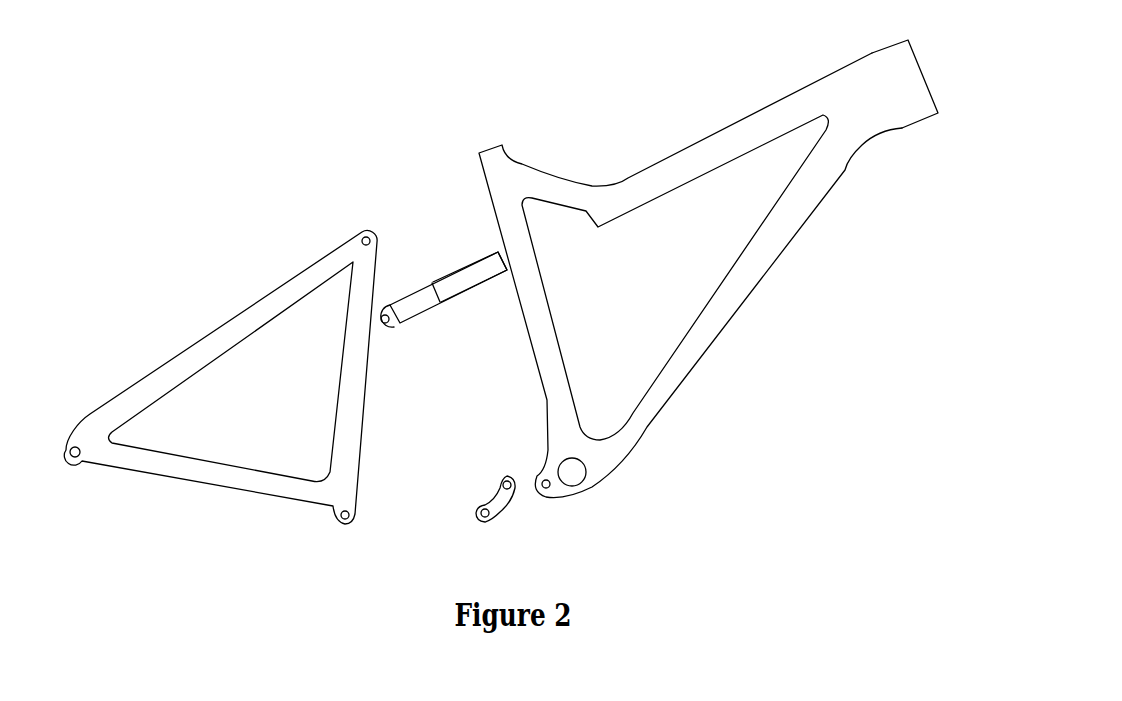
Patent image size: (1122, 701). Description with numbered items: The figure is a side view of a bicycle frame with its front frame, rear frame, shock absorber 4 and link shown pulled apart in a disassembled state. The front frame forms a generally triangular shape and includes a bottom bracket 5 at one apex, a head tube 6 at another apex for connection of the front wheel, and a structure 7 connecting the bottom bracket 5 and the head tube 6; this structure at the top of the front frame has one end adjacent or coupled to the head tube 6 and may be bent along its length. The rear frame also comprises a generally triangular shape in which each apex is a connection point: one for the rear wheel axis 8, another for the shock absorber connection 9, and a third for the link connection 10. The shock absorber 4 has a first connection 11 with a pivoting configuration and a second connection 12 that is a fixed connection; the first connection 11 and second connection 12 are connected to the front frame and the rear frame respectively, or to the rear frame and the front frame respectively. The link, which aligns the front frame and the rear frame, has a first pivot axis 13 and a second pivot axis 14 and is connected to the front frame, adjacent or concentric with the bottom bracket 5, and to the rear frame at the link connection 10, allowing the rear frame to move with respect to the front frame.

The shock absorber 4 is at (454, 305).
The bottom bracket 5 is at (573, 476).
The head tube 6 is at (915, 103).
The structure 7 is at (836, 58).
The rear wheel axis 8 is at (80, 459).
The shock absorber connection 9 is at (363, 234).
The link connection 10 is at (351, 519).
The first connection 11 is at (389, 323).
The second connection 12 is at (472, 279).
The first pivot axis 13 is at (481, 513).
The second pivot axis 14 is at (502, 482).